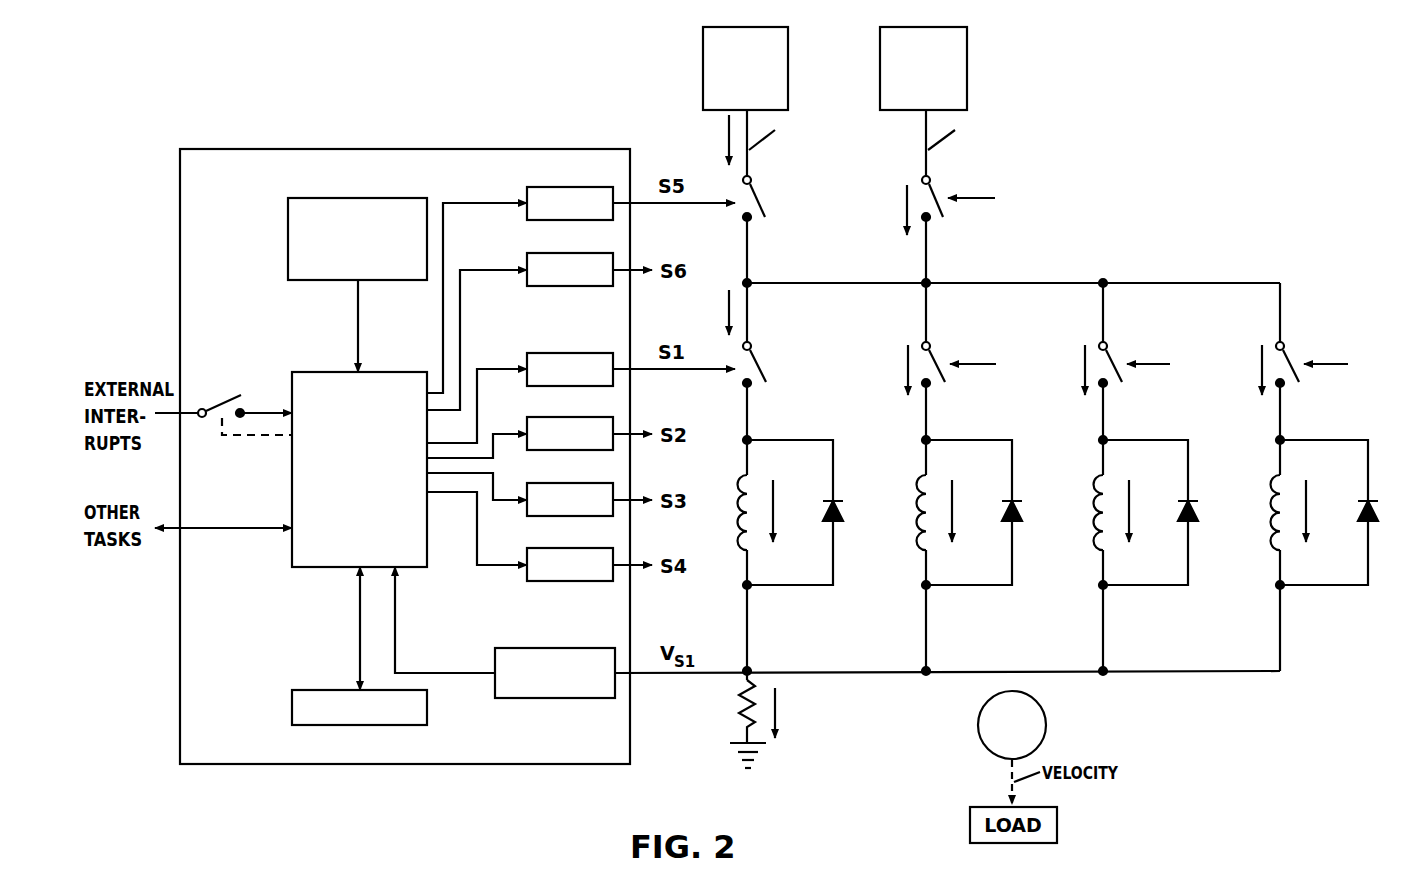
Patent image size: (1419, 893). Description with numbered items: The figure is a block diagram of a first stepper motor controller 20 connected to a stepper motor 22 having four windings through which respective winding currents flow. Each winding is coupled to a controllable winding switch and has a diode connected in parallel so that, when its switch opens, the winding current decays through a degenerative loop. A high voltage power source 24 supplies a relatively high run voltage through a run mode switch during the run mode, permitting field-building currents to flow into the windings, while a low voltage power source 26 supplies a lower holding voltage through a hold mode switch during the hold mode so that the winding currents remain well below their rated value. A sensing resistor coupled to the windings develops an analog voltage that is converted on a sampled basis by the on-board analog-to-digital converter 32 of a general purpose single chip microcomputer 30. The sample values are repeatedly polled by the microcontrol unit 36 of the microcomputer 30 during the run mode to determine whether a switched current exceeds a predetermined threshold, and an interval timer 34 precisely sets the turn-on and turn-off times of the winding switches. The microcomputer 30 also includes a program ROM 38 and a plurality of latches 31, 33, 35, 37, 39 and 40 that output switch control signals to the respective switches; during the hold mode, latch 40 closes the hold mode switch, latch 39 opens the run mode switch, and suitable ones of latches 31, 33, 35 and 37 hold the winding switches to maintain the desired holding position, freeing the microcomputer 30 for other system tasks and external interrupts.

The stepper motor controller 20 is at (545, 130).
The stepper motor 22 is at (1060, 725).
The high voltage power source 24 is at (788, 62).
The low voltage power source 26 is at (967, 62).
The microcomputer 30 is at (487, 768).
The latch 31 is at (567, 354).
The analog-to-digital converter 32 is at (566, 698).
The latch 33 is at (567, 418).
The interval timer 34 is at (292, 711).
The latch 35 is at (567, 484).
The microcontrol unit 36 is at (320, 570).
The latch 37 is at (567, 549).
The program ROM 38 is at (290, 223).
The latch 39 is at (567, 188).
The latch 40 is at (567, 254).